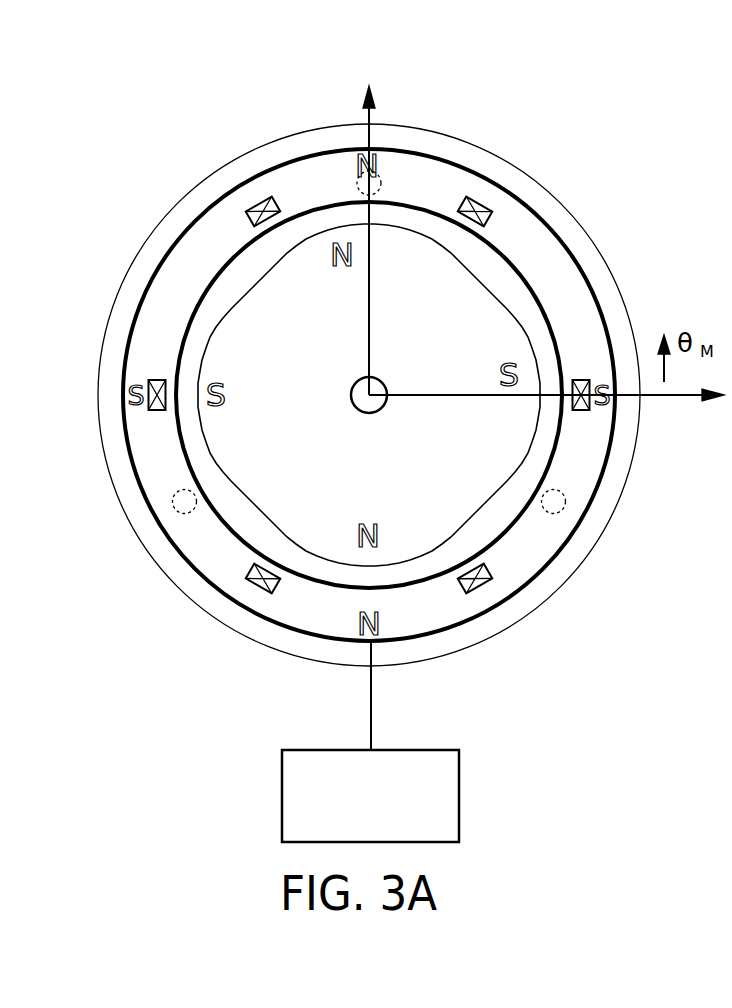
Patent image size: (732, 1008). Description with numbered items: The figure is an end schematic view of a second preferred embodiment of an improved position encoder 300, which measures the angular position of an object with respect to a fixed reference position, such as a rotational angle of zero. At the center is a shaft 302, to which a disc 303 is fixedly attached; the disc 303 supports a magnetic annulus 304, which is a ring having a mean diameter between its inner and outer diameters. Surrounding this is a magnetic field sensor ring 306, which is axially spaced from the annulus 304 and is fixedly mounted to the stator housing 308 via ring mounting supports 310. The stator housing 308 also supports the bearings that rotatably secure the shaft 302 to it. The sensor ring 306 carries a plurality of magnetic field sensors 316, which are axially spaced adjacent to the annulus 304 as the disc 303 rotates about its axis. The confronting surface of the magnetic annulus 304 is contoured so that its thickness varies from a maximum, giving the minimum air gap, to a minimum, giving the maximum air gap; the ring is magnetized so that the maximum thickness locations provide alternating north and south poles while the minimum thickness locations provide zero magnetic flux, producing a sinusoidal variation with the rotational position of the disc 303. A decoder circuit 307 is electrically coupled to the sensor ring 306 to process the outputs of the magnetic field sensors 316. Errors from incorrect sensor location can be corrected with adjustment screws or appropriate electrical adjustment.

The position encoder 300 is at (120, 826).
The shaft 302 is at (360, 400).
The disc 303 is at (475, 318).
The magnetic annulus 304 is at (538, 327).
The magnetic field sensor ring 306 is at (183, 263).
The decoder circuit 307 is at (452, 831).
The stator housing 308 is at (333, 122).
The ring mounting supports 310 is at (382, 178).
The magnetic field sensors 316 is at (250, 207).